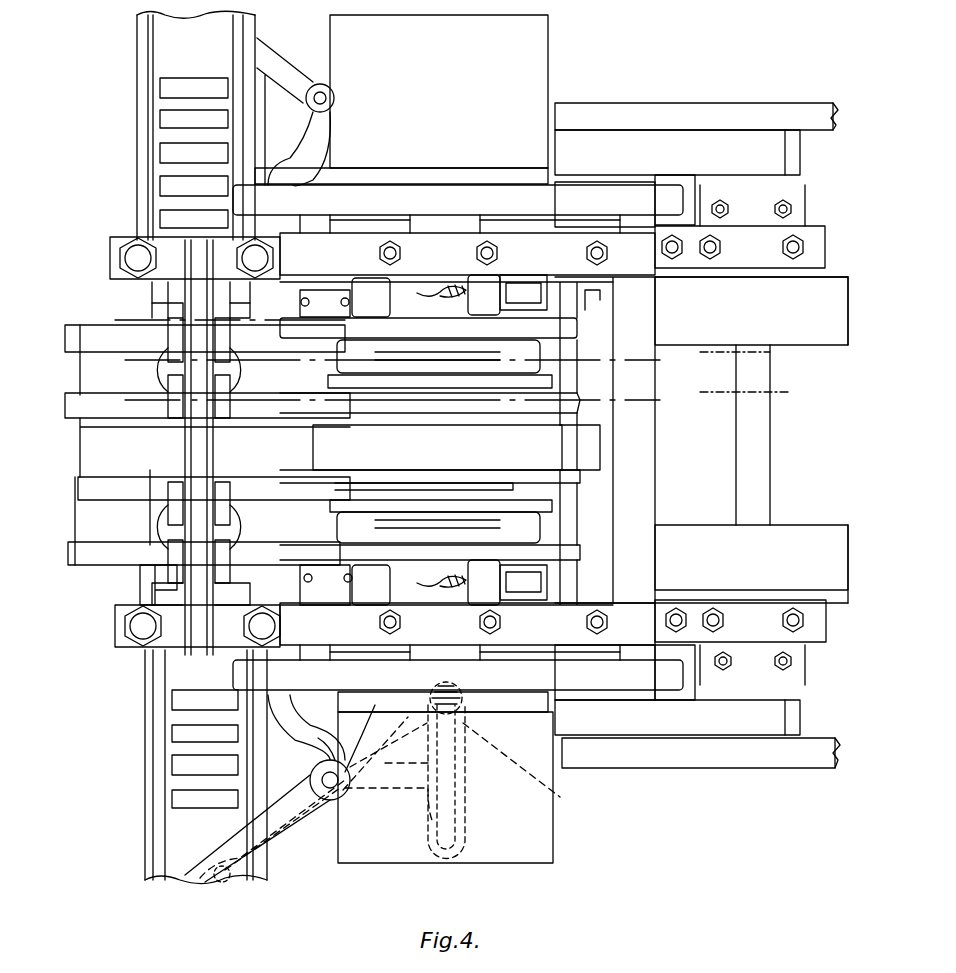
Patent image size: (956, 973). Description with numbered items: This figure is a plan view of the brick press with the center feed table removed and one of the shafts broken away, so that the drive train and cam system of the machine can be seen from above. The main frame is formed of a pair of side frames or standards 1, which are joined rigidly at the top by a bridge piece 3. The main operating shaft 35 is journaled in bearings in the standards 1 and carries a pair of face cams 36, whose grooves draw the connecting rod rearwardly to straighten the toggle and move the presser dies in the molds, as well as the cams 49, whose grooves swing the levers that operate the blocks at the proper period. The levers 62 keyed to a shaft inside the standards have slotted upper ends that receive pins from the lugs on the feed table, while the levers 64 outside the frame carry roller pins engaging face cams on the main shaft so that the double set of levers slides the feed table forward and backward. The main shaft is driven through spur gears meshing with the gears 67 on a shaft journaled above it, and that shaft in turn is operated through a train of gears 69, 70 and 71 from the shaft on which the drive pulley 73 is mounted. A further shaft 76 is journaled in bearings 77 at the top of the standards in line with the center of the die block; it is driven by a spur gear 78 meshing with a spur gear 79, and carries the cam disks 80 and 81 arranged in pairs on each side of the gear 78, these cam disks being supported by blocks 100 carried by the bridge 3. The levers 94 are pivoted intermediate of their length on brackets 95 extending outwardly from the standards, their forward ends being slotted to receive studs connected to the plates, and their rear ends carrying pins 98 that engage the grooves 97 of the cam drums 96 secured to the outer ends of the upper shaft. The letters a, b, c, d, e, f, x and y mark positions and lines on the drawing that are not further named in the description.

The side frames or standards 1 is at (815, 245).
The bridge piece 3 is at (195, 275).
The main operating shaft 35 is at (505, 552).
The face cams 36 is at (560, 460).
The cams 49 is at (555, 338).
The levers 62 is at (580, 310).
The levers 64 is at (548, 228).
The gears 67 is at (625, 195).
The gear 69 is at (690, 195).
The gear 70 is at (758, 150).
The gear 71 is at (808, 115).
The drive pulley 73 is at (798, 545).
The shaft 76 is at (180, 595).
The bearings 77 is at (160, 240).
The spur gear 78 is at (107, 455).
The spur gear 79 is at (605, 460).
The cam disk 80 is at (82, 410).
The cam disk 81 is at (80, 490).
The levers 94 is at (295, 840).
The brackets 95 is at (325, 722).
The cam drums 96 is at (535, 848).
The grooves 97 is at (525, 168).
The pins 98 is at (525, 770).
The blocks 100 is at (175, 540).
The bar a is at (100, 475).
The block b is at (540, 460).
The bar c is at (362, 433).
The line d is at (756, 387).
The bar e is at (384, 357).
The line f is at (744, 364).
The bar x is at (205, 326).
The part y is at (590, 300).